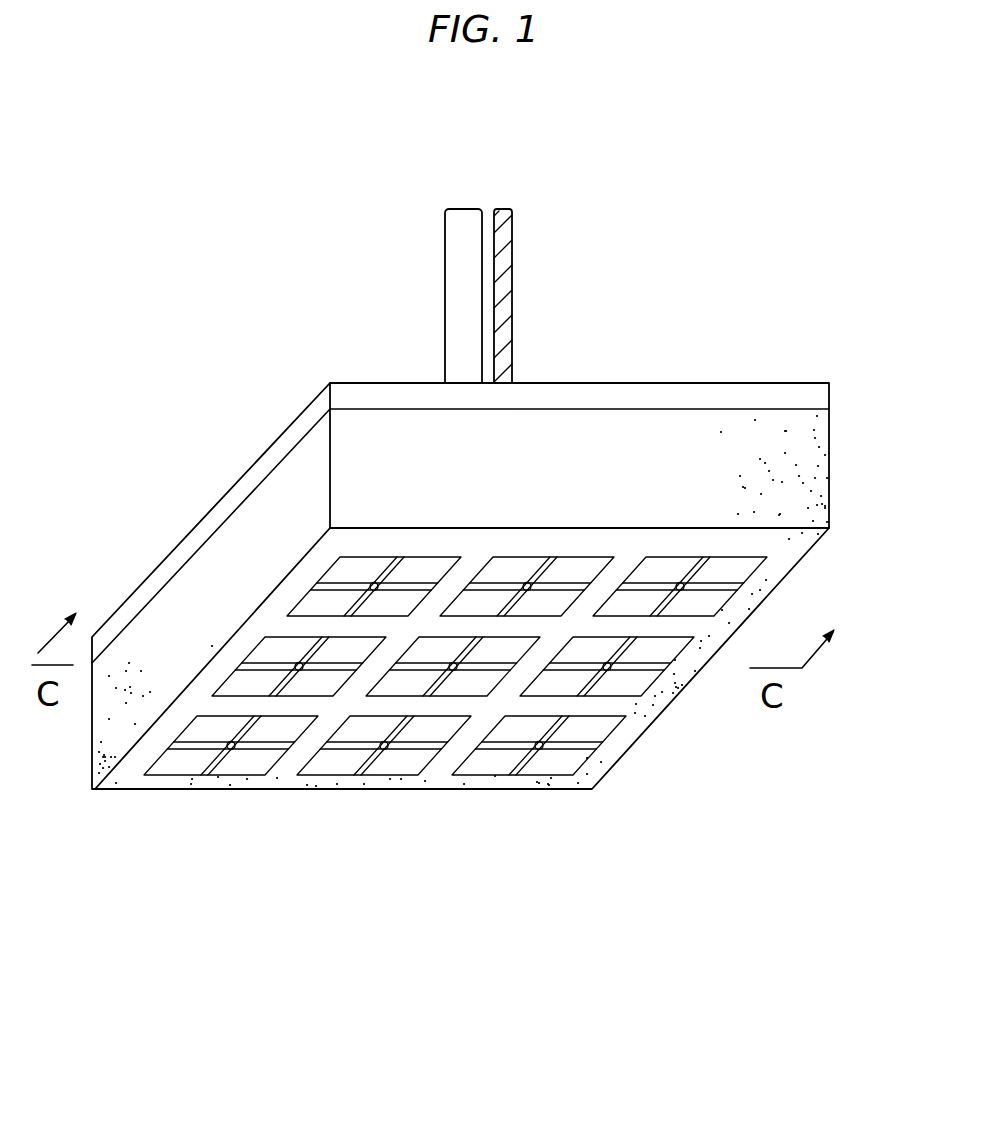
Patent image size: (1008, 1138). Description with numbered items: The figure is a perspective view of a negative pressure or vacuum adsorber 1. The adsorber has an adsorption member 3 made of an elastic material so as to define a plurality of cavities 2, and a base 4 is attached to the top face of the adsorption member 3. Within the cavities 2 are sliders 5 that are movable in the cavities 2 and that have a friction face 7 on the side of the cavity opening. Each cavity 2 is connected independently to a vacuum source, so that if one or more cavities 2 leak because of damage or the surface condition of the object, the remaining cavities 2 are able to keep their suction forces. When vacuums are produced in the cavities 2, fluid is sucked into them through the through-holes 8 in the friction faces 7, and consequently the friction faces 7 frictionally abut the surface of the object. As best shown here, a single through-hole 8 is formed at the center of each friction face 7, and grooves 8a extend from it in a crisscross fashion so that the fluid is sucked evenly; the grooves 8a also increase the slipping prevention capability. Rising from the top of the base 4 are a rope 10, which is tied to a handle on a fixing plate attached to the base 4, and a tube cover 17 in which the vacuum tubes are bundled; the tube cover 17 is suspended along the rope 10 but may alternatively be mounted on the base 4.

The vacuum adsorber 1 is at (751, 378).
The cavity 2 is at (174, 772).
The adsorption member 3 is at (810, 489).
The base 4 is at (240, 494).
The slider 5 is at (505, 757).
The friction face 7 is at (577, 753).
The through-hole 8 is at (232, 748).
The groove 8a is at (277, 744).
The rope 10 is at (504, 295).
The tube cover 17 is at (453, 287).